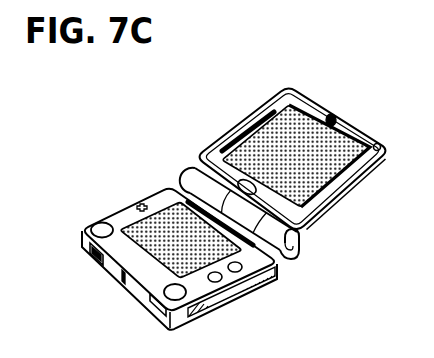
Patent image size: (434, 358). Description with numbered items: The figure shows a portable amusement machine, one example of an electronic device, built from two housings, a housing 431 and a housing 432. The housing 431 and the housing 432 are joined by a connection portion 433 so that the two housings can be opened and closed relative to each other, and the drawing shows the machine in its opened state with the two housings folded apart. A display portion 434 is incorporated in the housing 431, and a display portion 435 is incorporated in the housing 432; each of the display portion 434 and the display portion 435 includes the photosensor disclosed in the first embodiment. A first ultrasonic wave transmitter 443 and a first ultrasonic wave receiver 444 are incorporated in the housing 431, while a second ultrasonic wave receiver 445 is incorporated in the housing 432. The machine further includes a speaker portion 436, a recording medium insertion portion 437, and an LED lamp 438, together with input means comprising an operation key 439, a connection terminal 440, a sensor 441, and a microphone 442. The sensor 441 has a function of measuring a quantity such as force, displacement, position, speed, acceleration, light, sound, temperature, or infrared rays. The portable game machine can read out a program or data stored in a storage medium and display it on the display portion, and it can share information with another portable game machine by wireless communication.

The housing 431 is at (285, 97).
The housing 432 is at (175, 313).
The connection portion 433 is at (260, 219).
The display portion 434 is at (267, 146).
The display portion 435 is at (138, 228).
The speaker portion 436 is at (99, 224).
The recording medium insertion portion 437 is at (231, 300).
The LED lamp 438 is at (121, 277).
The operation key 439 is at (268, 268).
The connection terminal 440 is at (90, 261).
The sensor 441 is at (377, 143).
The microphone 442 is at (152, 306).
The first ultrasonic wave transmitter 443 is at (331, 114).
The first ultrasonic wave receiver 444 is at (222, 147).
The second ultrasonic wave receiver 445 is at (192, 178).